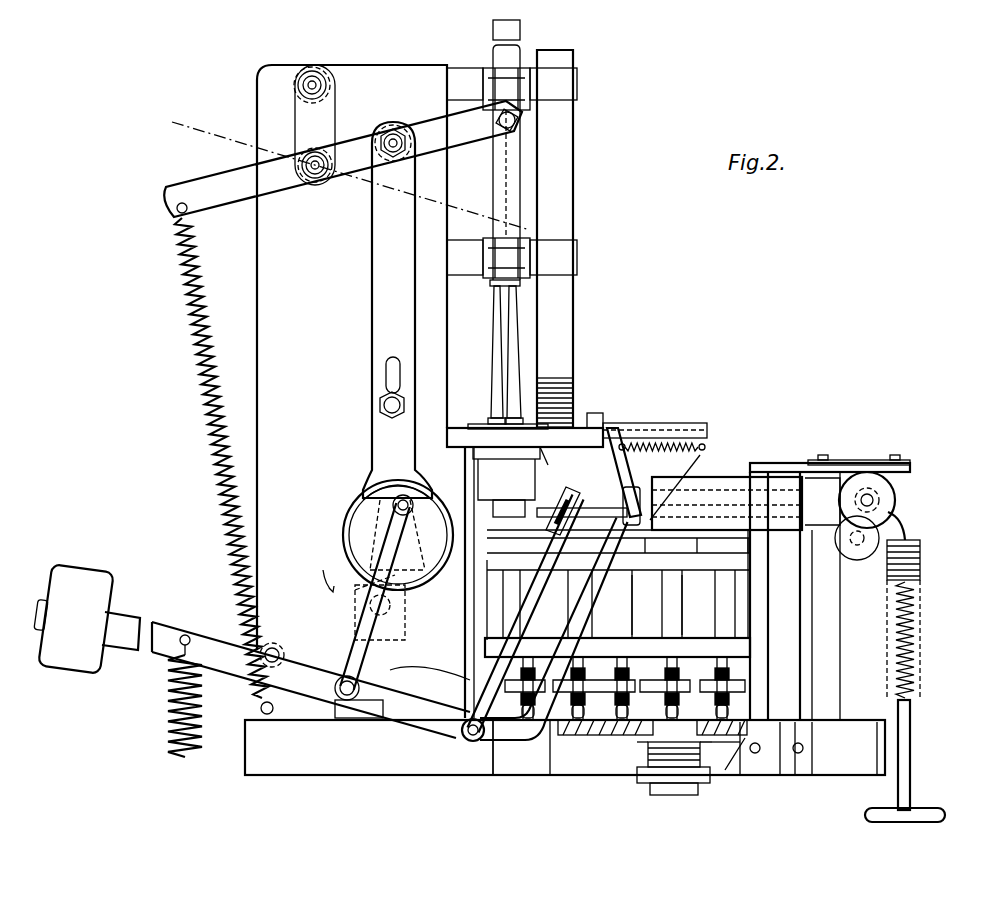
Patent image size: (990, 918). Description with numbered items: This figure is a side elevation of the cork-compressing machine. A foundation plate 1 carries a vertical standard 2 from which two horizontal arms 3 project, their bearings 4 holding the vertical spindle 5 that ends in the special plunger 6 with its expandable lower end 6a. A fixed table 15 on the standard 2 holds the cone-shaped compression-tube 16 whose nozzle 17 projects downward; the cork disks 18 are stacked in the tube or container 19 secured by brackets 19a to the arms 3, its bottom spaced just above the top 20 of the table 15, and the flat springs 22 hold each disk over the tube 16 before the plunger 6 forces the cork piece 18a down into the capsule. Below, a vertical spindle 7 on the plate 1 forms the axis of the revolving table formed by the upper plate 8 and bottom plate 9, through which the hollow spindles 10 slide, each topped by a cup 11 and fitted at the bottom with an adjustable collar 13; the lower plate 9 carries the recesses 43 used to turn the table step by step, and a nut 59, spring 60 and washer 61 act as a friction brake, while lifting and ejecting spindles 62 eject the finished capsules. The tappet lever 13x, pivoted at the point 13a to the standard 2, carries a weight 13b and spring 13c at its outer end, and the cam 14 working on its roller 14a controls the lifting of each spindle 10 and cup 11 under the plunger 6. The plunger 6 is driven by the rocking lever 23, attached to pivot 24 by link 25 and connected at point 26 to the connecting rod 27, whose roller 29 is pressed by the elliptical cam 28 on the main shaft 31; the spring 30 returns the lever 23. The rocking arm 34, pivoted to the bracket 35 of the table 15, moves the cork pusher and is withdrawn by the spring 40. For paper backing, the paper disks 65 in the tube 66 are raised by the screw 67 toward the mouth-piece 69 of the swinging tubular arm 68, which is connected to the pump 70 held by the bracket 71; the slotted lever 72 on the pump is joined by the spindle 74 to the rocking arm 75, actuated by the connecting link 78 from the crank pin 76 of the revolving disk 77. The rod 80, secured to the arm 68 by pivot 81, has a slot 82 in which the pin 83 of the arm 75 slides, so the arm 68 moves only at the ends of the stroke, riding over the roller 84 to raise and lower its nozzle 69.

The foundation plate 1 is at (278, 765).
The vertical bracket or standard 2 is at (365, 391).
The horizontal arms 3 is at (455, 70).
The bearings 4 is at (495, 75).
The vertical spindle 5 is at (520, 30).
The special plunger 6 is at (500, 335).
The lower end of the plunger 6a is at (512, 418).
The vertical spindle 7 is at (650, 745).
The upper plate of the table 8 is at (750, 575).
The bottom plate of the table 9 is at (740, 652).
The hollow spindles 10 is at (626, 600).
The cup 11 is at (690, 555).
The vertically adjustable collar 13 is at (600, 737).
The pivot point 13a is at (274, 648).
The weight 13b is at (108, 590).
The spring 13c is at (172, 712).
The tappet lever 13x is at (440, 666).
The cam 14 is at (345, 548).
The roller 14a is at (410, 618).
The fixed table 15 is at (525, 441).
The compression-tube 16 is at (506, 473).
The nozzle 17 is at (493, 510).
The cork disks 18 is at (560, 385).
The cork piece 18a is at (488, 422).
The tube or container 19 is at (565, 305).
The brackets 19a is at (577, 88).
The top of the table 20 is at (545, 448).
The flat springs 22 is at (595, 413).
The rocking bar or lever 23 is at (285, 195).
The pivot 24 is at (314, 82).
The link 25 is at (300, 115).
The connection point 26 is at (392, 130).
The connecting rod 27 is at (385, 284).
The elliptical cam 28 is at (380, 490).
The roller 29 is at (360, 592).
The spring 30 is at (205, 400).
The main shaft 31 is at (375, 540).
The rocking arm 34 is at (655, 415).
The downwardly projecting bracket 35 is at (705, 455).
The spring 40 is at (660, 445).
The recesses 43 is at (700, 640).
The nut 59 is at (705, 768).
The spring 60 is at (660, 775).
The washer 61 is at (740, 760).
The lifting and ejecting spindles 62 is at (555, 735).
The paper disks 65 is at (920, 558).
The tube 66 is at (920, 622).
The automatically operated screw 67 is at (910, 745).
The swinging tubular arm 68 is at (896, 504).
The mouth-piece 69 is at (905, 530).
The pump 70 is at (717, 487).
The bracket 71 is at (760, 540).
The slotted lever 72 is at (520, 622).
The spindle 74 is at (462, 732).
The rocking arm 75 is at (578, 616).
The crank pin 76 is at (412, 505).
The revolving disk 77 is at (450, 590).
The connecting link 78 is at (362, 626).
The rod 80 is at (585, 512).
The pivot 81 is at (866, 490).
The slot 82 is at (600, 518).
The pin 83 is at (620, 430).
The roller 84 is at (862, 560).